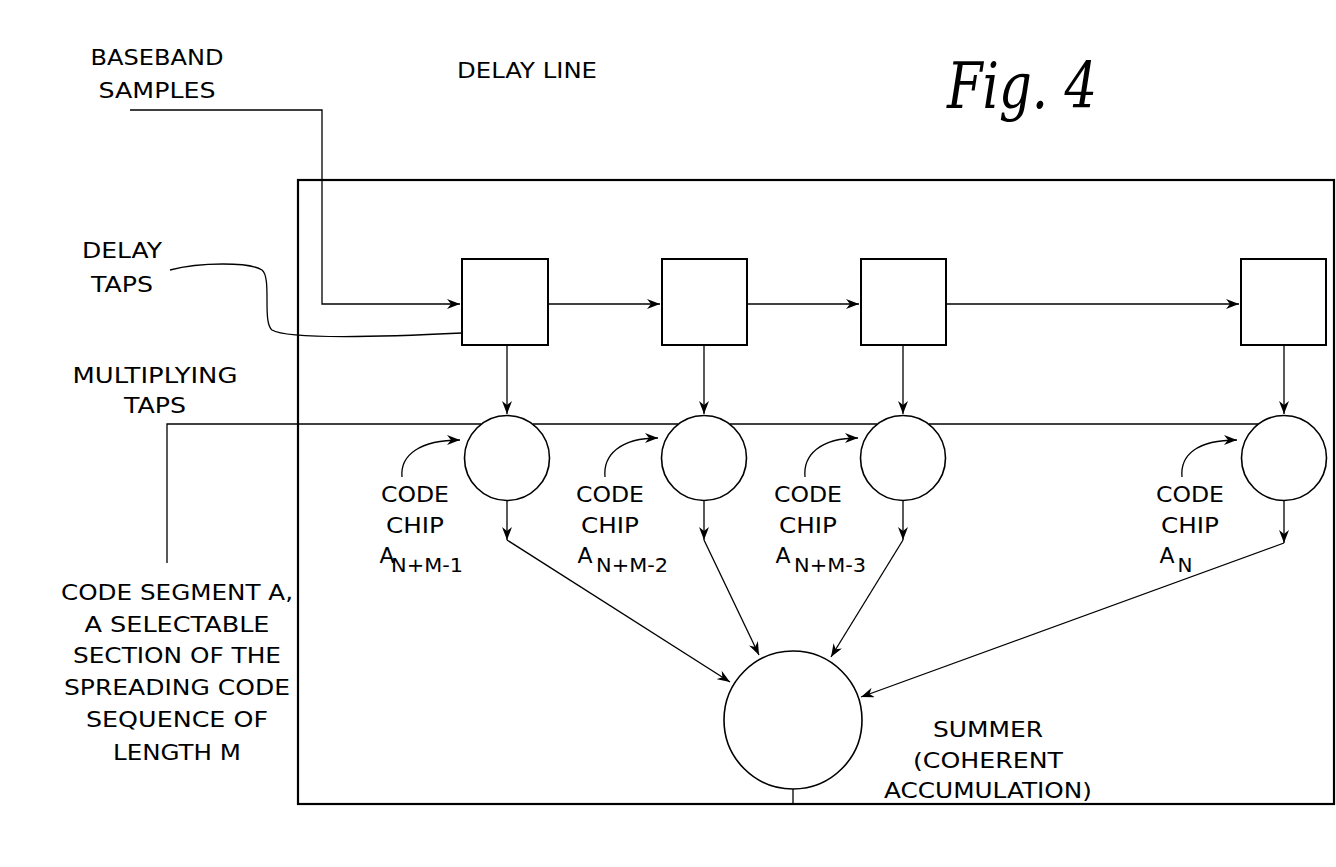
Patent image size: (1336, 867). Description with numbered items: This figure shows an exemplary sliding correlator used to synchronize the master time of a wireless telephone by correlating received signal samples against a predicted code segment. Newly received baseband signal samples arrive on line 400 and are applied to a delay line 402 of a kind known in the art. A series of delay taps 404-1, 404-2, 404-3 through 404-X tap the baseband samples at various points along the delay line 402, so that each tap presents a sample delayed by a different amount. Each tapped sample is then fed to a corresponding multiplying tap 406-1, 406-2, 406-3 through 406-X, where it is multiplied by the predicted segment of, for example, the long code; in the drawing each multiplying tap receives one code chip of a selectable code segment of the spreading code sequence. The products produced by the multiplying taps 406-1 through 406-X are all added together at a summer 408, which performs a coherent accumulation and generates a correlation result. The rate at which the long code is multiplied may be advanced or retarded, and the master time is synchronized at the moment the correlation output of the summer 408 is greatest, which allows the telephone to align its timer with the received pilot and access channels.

The line 400 is at (283, 110).
The delay line 402 is at (597, 300).
The delay tap 404-1 is at (505, 336).
The delay tap 404-2 is at (704, 336).
The delay tap 404-3 is at (903, 336).
The delay tap 404-X is at (1283, 336).
The multiplying tap 406-1 is at (598, 549).
The multiplying tap 406-2 is at (711, 536).
The multiplying tap 406-3 is at (888, 537).
The multiplying tap 406-X is at (1094, 557).
The summer 408 is at (793, 727).